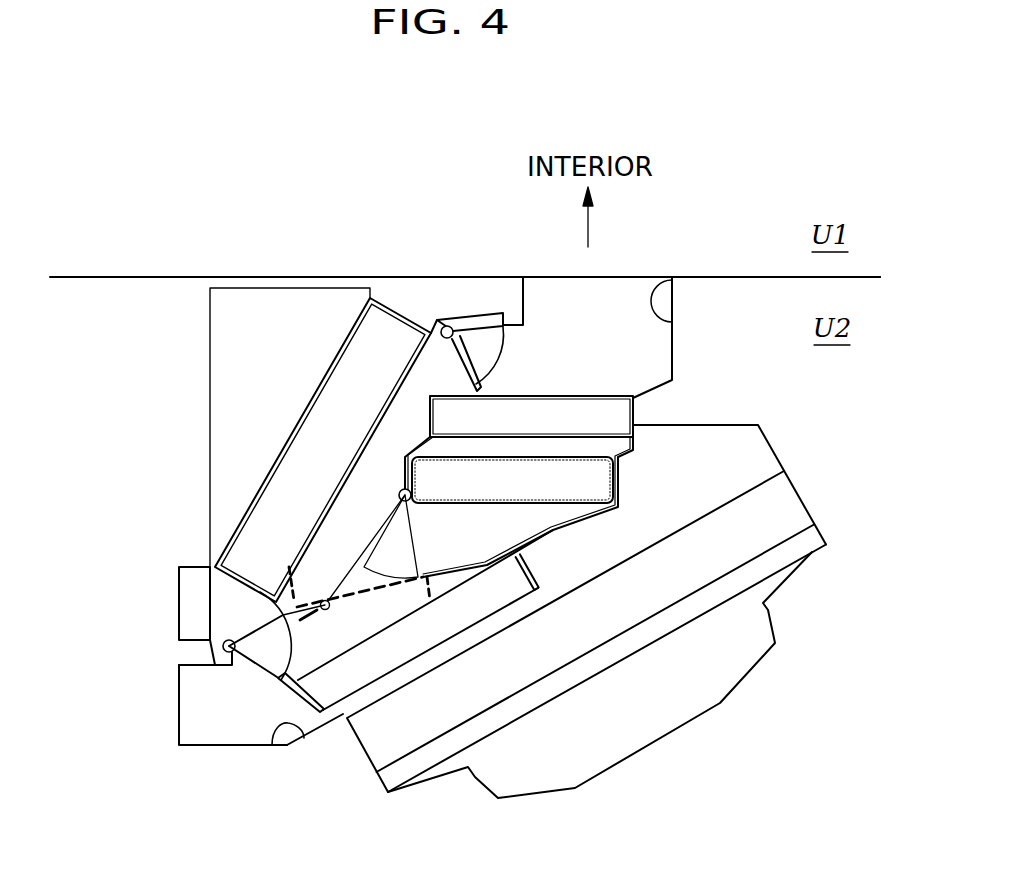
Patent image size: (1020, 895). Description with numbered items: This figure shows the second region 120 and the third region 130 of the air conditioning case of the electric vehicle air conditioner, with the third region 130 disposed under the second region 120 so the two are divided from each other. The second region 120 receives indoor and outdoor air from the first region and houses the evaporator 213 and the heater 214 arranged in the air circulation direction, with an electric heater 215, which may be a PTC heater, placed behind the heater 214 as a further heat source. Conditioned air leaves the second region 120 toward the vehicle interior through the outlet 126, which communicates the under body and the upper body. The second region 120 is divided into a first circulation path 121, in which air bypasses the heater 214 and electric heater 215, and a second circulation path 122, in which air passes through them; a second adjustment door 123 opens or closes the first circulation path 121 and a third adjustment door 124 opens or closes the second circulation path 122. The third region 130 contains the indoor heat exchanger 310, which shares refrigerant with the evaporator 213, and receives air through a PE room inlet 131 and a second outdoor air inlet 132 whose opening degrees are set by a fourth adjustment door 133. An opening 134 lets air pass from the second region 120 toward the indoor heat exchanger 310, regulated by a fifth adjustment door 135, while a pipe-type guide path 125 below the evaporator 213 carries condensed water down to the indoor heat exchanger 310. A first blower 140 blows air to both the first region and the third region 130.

The second region 120 is at (672, 277).
The first circulation path 121 is at (437, 320).
The second circulation path 122 is at (553, 530).
The second adjustment door 123 is at (483, 343).
The third adjustment door 124 is at (392, 540).
The guide path 125 is at (340, 660).
The outlet 126 is at (632, 277).
The third region 130 is at (283, 725).
The PE room inlet 131 is at (178, 603).
The second outdoor air inlet 132 is at (178, 705).
The fourth adjustment door 133 is at (263, 655).
The opening 134 is at (290, 570).
The fifth adjustment door 135 is at (340, 660).
The first blower 140 is at (673, 688).
The evaporator 213 is at (358, 363).
The heater 214 is at (595, 474).
The electric heater 215 is at (613, 413).
The indoor heat exchanger 310 is at (393, 650).